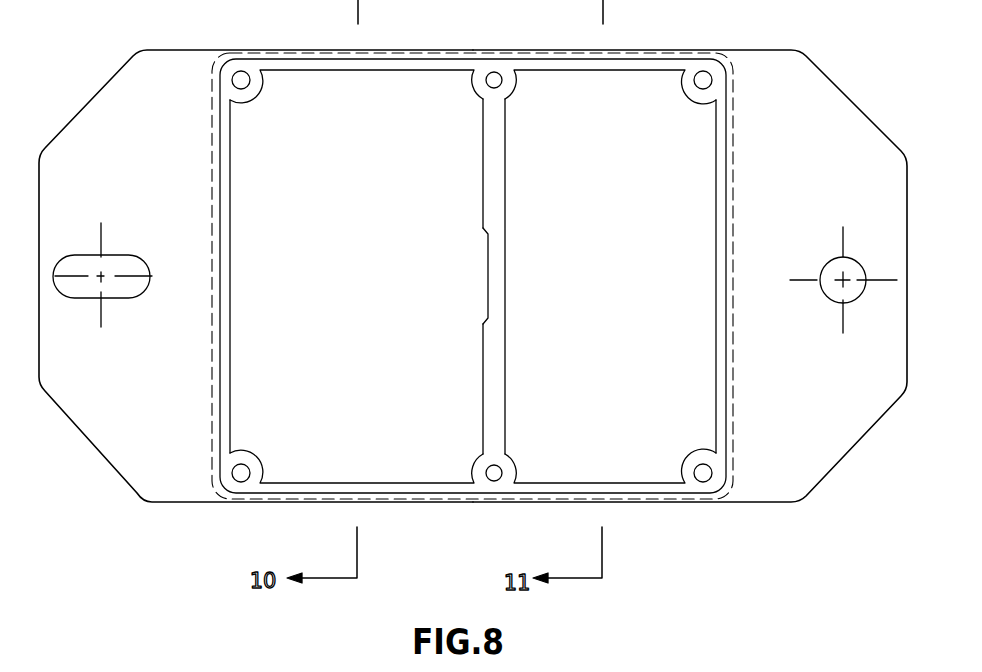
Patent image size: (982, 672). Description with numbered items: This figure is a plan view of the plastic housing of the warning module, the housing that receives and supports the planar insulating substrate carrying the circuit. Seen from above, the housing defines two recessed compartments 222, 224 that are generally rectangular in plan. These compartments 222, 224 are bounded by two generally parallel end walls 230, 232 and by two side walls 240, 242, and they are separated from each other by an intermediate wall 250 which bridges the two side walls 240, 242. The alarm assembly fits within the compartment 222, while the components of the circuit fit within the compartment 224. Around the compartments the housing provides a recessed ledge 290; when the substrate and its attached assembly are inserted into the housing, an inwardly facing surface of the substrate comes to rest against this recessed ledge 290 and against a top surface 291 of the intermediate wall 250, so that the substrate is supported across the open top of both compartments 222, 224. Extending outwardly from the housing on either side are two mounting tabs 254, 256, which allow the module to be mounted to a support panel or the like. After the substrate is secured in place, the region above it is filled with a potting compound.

The mounting tab 254 is at (130, 98).
The mounting tab 256 is at (820, 108).
The recessed ledge 290 is at (722, 163).
The side wall 240 is at (392, 60).
The side wall 242 is at (392, 494).
The end wall 230 is at (213, 220).
The end wall 232 is at (733, 353).
The top surface 291 is at (492, 150).
The intermediate wall 250 is at (483, 216).
The compartment 222 is at (328, 259).
The compartment 224 is at (611, 231).